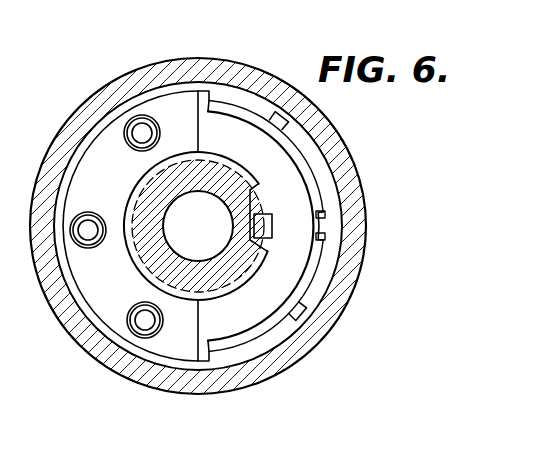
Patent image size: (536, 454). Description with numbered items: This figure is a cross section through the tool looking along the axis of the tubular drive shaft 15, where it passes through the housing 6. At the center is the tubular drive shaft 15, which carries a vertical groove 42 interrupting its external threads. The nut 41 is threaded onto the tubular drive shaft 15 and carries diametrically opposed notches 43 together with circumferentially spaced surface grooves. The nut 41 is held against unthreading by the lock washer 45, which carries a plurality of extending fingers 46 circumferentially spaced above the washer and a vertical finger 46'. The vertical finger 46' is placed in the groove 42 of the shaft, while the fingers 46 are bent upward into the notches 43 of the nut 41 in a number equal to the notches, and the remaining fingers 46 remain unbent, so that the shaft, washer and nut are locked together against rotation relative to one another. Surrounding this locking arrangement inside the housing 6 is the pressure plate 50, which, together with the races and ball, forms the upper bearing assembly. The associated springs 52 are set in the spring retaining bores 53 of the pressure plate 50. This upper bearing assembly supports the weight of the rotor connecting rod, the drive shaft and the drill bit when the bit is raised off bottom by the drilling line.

The housing 6 is at (78, 120).
The tubular drive shaft 15 is at (152, 223).
The nut 41 is at (311, 264).
The vertical groove 42 is at (268, 234).
The notches 43 is at (220, 106).
The lock washer 45 is at (286, 188).
The extending fingers 46 is at (339, 129).
The vertical finger 46' is at (243, 188).
The pressure plate 50 is at (100, 277).
The springs 52 is at (137, 150).
The spring retaining bores 53 is at (142, 328).